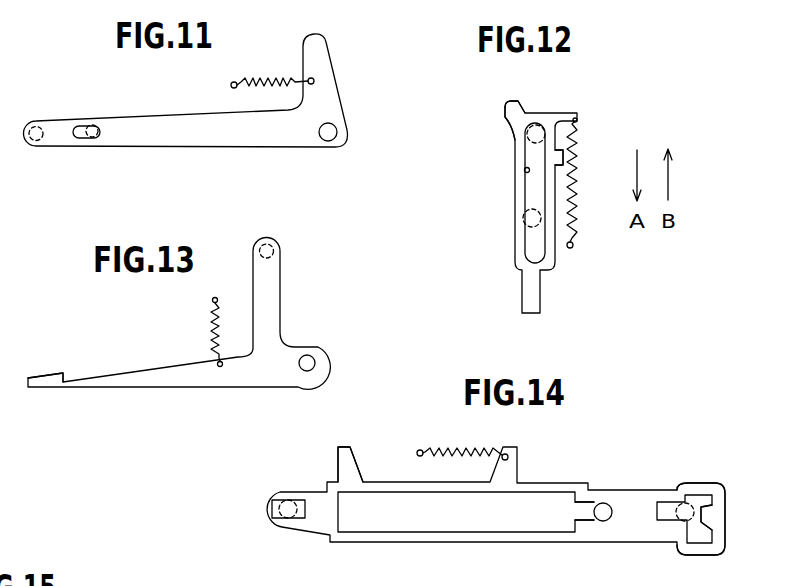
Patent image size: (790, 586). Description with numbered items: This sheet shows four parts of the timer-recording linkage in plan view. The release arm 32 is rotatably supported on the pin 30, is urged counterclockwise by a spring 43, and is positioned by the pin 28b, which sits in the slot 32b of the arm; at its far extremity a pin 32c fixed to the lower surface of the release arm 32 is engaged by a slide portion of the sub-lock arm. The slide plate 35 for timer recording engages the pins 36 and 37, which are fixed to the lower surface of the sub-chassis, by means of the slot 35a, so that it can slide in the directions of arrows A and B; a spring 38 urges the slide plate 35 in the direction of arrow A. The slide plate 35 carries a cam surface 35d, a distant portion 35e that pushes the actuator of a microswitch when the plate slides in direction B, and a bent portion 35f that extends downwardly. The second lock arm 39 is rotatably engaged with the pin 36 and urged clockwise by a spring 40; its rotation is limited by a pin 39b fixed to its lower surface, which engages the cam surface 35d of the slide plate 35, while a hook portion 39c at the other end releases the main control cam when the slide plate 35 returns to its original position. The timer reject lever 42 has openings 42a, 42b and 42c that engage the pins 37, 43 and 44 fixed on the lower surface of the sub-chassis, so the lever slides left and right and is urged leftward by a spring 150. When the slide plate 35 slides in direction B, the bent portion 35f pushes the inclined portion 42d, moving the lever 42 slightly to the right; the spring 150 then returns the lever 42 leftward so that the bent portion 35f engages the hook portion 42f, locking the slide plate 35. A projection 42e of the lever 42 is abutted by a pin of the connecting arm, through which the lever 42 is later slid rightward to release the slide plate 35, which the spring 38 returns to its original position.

In FIG. 11, the release arm 32 is at (228, 147).
In FIG. 11, the pin 32c is at (40, 141).
In FIG. 11, the slot 32b is at (85, 138).
In FIG. 11, the pin 28b is at (98, 137).
In FIG. 11, the pin 30 is at (337, 132).
In FIG. 11, the spring 43 is at (270, 80).
In FIG. 14, the spring 43 is at (605, 501).
In FIG. 12, the slide plate 35 is at (540, 282).
In FIG. 12, the slot 35a is at (525, 172).
In FIG. 12, the cam surface 35d is at (503, 120).
In FIG. 12, the distant portion 35e is at (508, 100).
In FIG. 12, the bent portion 35f is at (563, 158).
In FIG. 12, the pin 37 is at (538, 128).
In FIG. 14, the pin 37 is at (701, 496).
In FIG. 12, the pin 36 is at (522, 218).
In FIG. 13, the pin 36 is at (312, 359).
In FIG. 12, the spring 38 is at (578, 180).
In FIG. 13, the second lock arm 39 is at (238, 385).
In FIG. 13, the pin 39b is at (281, 250).
In FIG. 13, the hook portion 39c is at (67, 371).
In FIG. 13, the spring 40 is at (212, 336).
In FIG. 14, the timer reject lever 42 is at (646, 542).
In FIG. 14, the opening 42a is at (664, 500).
In FIG. 14, the opening 42b is at (583, 518).
In FIG. 14, the opening 42c is at (284, 521).
In FIG. 14, the inclined portion 42d is at (722, 541).
In FIG. 14, the projection 42e is at (346, 453).
In FIG. 14, the hook portion 42f is at (712, 507).
In FIG. 14, the pin 44 is at (292, 500).
In FIG. 14, the spring 150 is at (456, 452).